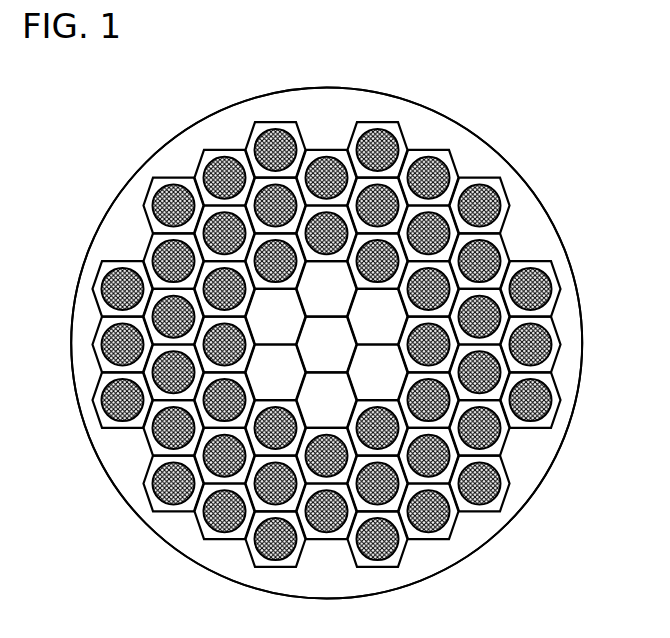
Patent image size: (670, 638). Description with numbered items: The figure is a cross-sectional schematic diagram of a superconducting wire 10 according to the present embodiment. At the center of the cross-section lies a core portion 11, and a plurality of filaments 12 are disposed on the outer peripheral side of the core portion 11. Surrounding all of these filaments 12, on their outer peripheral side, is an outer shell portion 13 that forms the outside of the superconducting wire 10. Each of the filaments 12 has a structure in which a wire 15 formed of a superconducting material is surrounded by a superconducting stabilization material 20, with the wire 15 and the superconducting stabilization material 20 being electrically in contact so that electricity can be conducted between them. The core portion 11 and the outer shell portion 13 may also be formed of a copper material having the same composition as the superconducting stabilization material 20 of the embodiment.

The superconducting wire 10 is at (558, 131).
The core portion 11 is at (272, 373).
The filaments 12 is at (509, 244).
The outer shell portion 13 is at (535, 458).
The wire formed of a superconducting material 15 is at (547, 352).
The superconducting stabilization material 20 is at (555, 334).